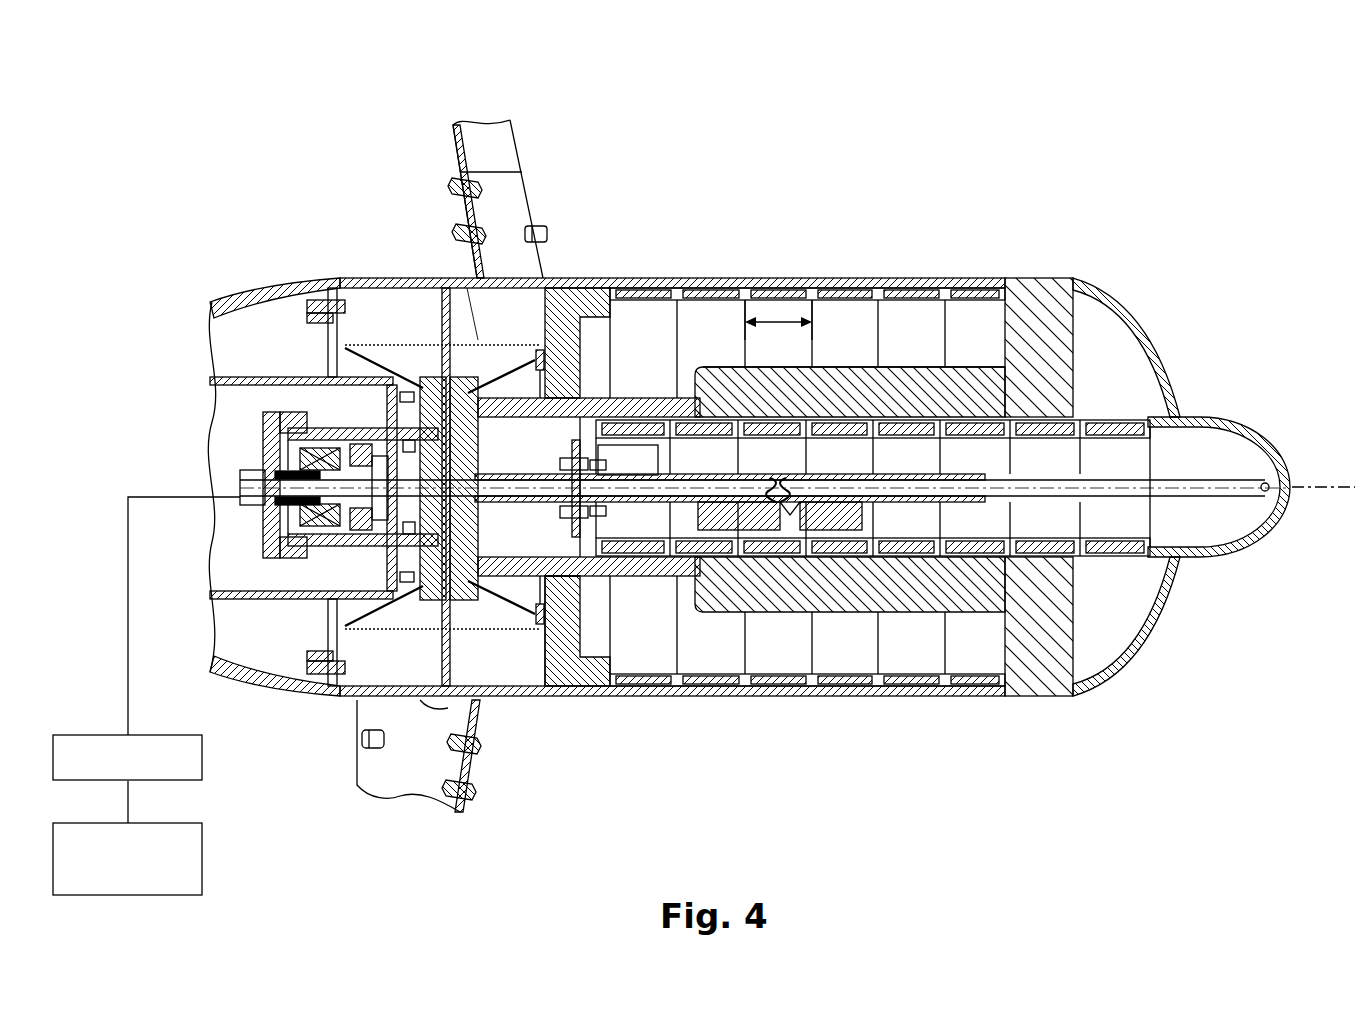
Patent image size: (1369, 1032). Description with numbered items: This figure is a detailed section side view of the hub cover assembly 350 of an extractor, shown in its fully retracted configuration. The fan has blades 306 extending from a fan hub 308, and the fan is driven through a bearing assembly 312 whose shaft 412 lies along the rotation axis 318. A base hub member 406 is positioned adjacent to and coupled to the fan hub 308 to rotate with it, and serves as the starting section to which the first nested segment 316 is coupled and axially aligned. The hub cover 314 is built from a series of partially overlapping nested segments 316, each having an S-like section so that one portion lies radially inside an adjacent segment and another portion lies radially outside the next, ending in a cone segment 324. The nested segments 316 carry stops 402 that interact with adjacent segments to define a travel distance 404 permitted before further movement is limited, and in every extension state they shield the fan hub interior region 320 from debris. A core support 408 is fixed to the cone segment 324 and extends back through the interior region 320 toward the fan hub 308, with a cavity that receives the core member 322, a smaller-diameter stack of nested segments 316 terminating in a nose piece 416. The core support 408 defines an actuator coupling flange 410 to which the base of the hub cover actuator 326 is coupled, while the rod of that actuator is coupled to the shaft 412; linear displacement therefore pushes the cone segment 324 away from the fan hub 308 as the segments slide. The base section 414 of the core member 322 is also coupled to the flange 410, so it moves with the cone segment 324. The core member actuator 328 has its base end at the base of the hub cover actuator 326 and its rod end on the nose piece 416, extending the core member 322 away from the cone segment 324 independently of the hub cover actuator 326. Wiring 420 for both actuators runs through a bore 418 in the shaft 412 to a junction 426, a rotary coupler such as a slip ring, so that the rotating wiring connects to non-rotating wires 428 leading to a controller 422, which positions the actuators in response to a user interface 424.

The hub cover assembly 350 is at (1152, 128).
The hub cover 314 is at (966, 188).
The blades 306 is at (515, 210).
The wiring 420 is at (430, 375).
The shaft 412 is at (343, 365).
The nested segments 316 is at (717, 278).
The stops 402 is at (812, 282).
The travel distance 404 is at (680, 282).
The core support 408 is at (910, 367).
The fan hub interior region 320 is at (957, 346).
The cone segment 324 is at (1045, 280).
The core member 322 is at (1198, 418).
The nose piece 416 is at (1272, 452).
The rotation axis 318 is at (1328, 500).
The bearing assembly 312 is at (330, 440).
The junction 426 is at (240, 485).
The wires 428 is at (127, 622).
The bore 418 is at (313, 540).
The actuator coupling flange 410 is at (578, 555).
The base section 414 is at (633, 557).
The hub cover actuator 326 is at (727, 530).
The core member actuator 328 is at (838, 530).
The fan hub 308 is at (560, 700).
The base hub member 406 is at (583, 700).
The controller 422 is at (203, 758).
The user interface 424 is at (203, 858).